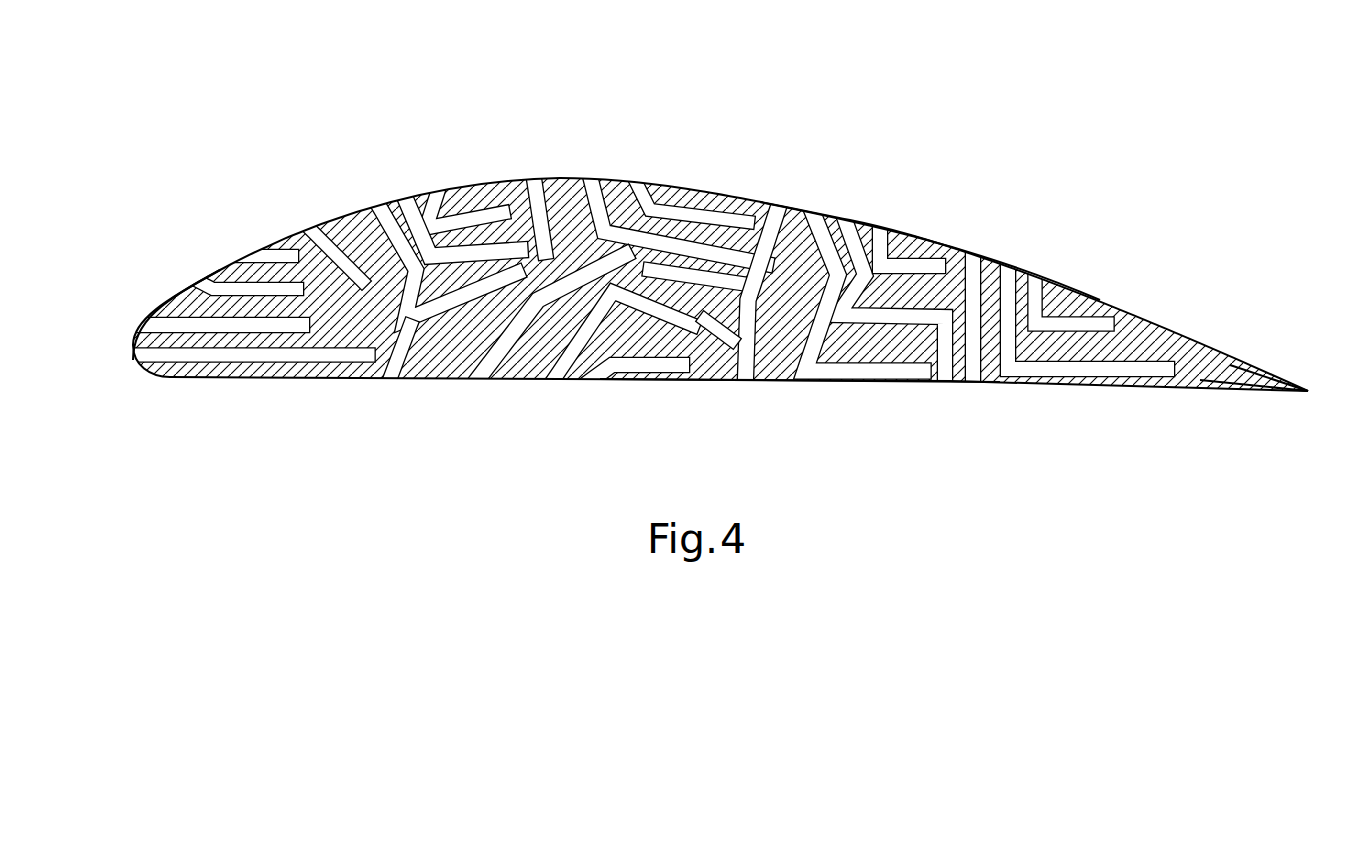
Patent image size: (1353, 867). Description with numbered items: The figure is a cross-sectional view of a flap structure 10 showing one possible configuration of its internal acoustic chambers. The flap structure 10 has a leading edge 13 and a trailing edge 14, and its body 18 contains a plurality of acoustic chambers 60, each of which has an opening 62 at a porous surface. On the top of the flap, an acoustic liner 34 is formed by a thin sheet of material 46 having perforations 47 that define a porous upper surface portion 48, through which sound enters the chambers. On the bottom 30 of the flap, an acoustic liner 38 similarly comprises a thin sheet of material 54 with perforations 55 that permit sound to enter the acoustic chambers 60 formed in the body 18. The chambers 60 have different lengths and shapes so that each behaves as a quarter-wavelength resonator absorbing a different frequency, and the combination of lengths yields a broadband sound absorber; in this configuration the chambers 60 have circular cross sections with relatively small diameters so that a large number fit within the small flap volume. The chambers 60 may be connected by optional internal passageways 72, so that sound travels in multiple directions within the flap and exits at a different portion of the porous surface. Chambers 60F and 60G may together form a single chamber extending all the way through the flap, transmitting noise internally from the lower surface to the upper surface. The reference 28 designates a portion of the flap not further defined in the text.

The flap structure 10 is at (1082, 278).
The leading edge 13 is at (140, 335).
The trailing edge 14 is at (1306, 397).
The body 18 is at (362, 382).
The upper surface 28 is at (914, 223).
The bottom 30 is at (763, 392).
The acoustic liner 34 is at (522, 183).
The acoustic liner 38 is at (512, 383).
The thin sheet of material 46 is at (740, 185).
The perforations 47 is at (394, 208).
The porous upper surface portion 48 is at (465, 183).
The thin sheet of material 54 is at (437, 383).
The perforations 55 is at (408, 382).
The acoustic chambers 60 is at (313, 226).
The chamber 60F is at (812, 222).
The chamber 60G is at (753, 391).
The opening 62 is at (257, 250).
The internal passageways 72 is at (668, 277).